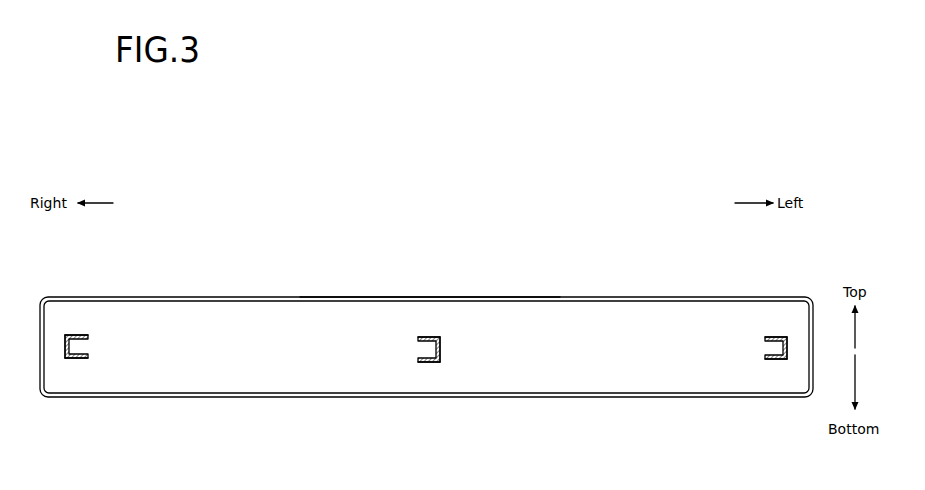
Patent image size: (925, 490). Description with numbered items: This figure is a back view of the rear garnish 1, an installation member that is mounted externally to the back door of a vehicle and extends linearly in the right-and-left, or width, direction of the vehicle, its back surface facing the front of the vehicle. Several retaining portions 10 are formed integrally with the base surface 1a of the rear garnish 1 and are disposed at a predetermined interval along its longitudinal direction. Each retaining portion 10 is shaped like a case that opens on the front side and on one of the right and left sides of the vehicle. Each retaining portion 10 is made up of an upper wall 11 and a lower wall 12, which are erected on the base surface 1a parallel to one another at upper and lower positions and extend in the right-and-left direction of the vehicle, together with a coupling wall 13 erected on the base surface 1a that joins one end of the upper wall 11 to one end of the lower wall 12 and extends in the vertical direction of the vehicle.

The rear garnish 1 is at (625, 297).
The base surface 1a is at (559, 297).
The retaining portion 10 is at (82, 334).
The upper wall 11 is at (86, 335).
The lower wall 12 is at (80, 358).
The coupling wall 13 is at (66, 344).